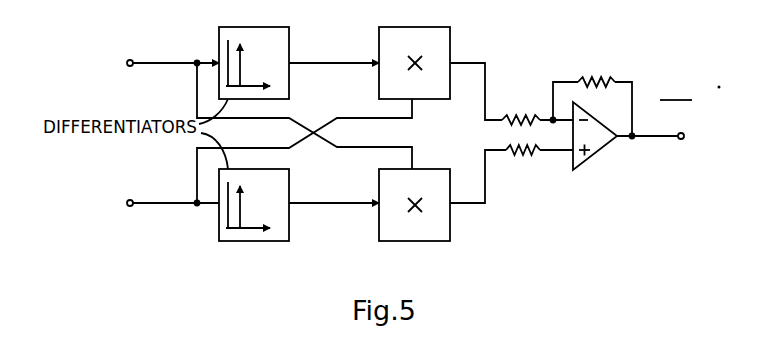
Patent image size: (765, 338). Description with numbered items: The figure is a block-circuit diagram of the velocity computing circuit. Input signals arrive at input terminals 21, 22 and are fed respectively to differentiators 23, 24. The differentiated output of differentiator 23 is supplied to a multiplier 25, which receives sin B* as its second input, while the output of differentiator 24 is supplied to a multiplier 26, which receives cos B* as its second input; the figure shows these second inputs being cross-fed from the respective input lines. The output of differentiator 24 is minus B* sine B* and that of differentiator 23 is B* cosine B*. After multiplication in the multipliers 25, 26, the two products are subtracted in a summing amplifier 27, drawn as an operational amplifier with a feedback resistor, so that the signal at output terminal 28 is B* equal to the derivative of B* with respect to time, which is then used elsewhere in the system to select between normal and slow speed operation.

The input terminal 21 is at (159, 54).
The input terminal 22 is at (159, 213).
The differentiator 23 is at (249, 13).
The differentiator 24 is at (231, 242).
The multiplier 25 is at (409, 13).
The multiplier 26 is at (403, 242).
The summing amplifier 27 is at (591, 155).
The output terminal 28 is at (678, 123).